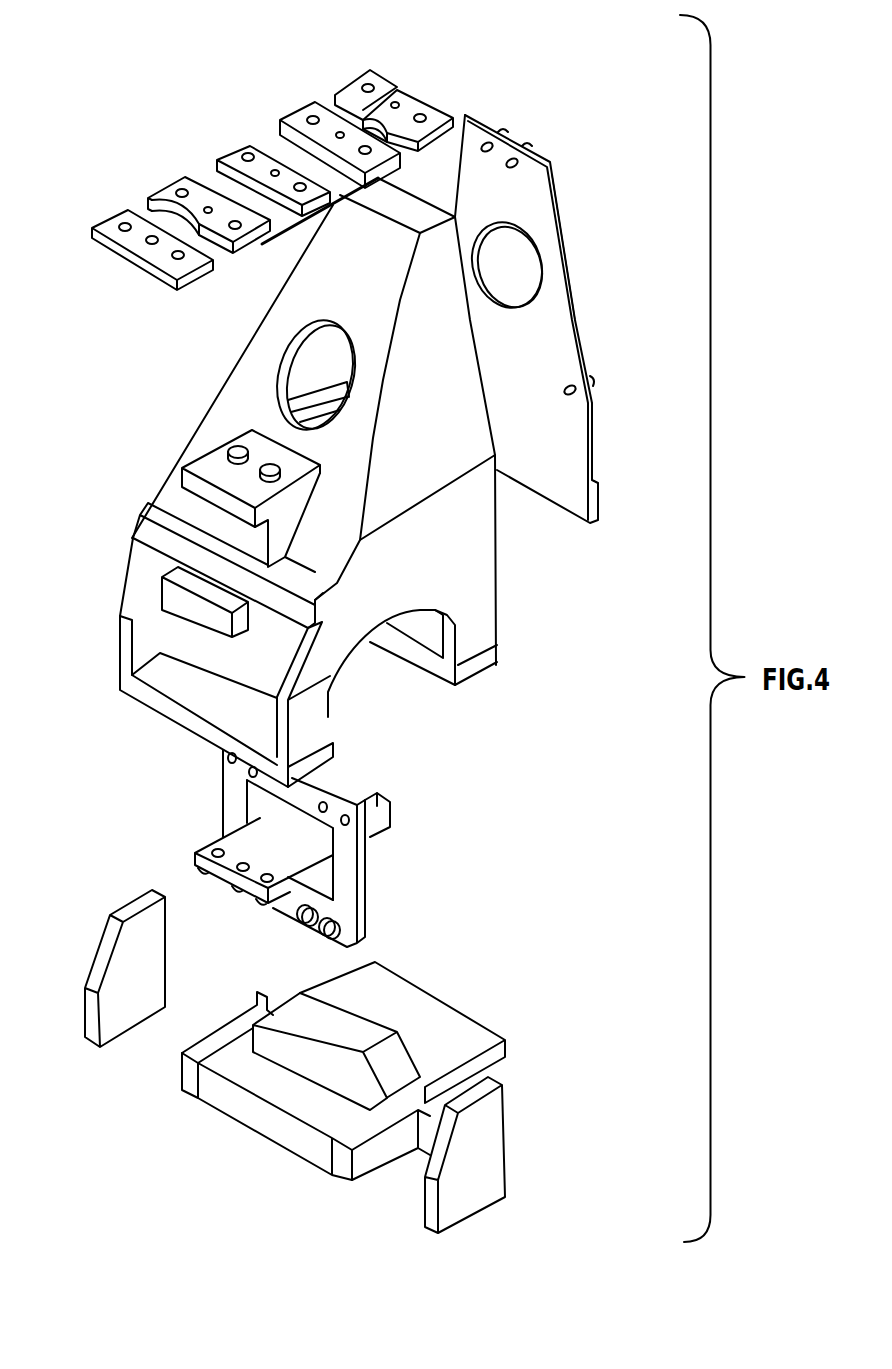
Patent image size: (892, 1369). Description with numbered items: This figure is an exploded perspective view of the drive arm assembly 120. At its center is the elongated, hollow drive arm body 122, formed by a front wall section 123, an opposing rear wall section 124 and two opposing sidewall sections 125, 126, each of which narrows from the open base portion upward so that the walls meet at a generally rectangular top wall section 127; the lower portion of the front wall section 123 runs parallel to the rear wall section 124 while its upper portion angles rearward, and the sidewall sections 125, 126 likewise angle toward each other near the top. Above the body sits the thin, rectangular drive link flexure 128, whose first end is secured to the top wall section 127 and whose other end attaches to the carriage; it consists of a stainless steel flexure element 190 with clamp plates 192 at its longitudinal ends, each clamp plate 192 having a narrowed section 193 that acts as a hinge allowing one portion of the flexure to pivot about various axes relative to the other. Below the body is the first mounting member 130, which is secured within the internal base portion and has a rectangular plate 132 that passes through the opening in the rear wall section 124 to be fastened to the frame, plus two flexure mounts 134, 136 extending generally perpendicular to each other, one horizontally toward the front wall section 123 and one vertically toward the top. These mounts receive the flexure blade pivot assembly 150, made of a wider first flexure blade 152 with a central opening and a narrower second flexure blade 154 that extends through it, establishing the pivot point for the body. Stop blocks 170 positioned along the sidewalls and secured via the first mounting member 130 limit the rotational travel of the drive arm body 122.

The drive arm assembly 120 is at (580, 224).
The drive arm body 122 is at (611, 460).
The front wall section 123 is at (225, 415).
The rear wall section 124 is at (580, 327).
The sidewall section 125 is at (473, 557).
The sidewall section 126 is at (243, 357).
The top wall section 127 is at (398, 203).
The drive link flexure 128 is at (233, 150).
The first mounting member 130 is at (372, 1062).
The rectangular plate 132 is at (435, 1010).
The flexure mount 134 is at (278, 1107).
The flexure mount 136 is at (310, 998).
The flexure blade pivot assembly 150 is at (420, 820).
The first flexure blade 152 is at (348, 858).
The second flexure blade 154 is at (253, 840).
The stop block 170 is at (95, 955).
The flexure element 190 is at (280, 147).
The clamp plate 192 is at (182, 183).
The narrowed section 193 is at (173, 227).